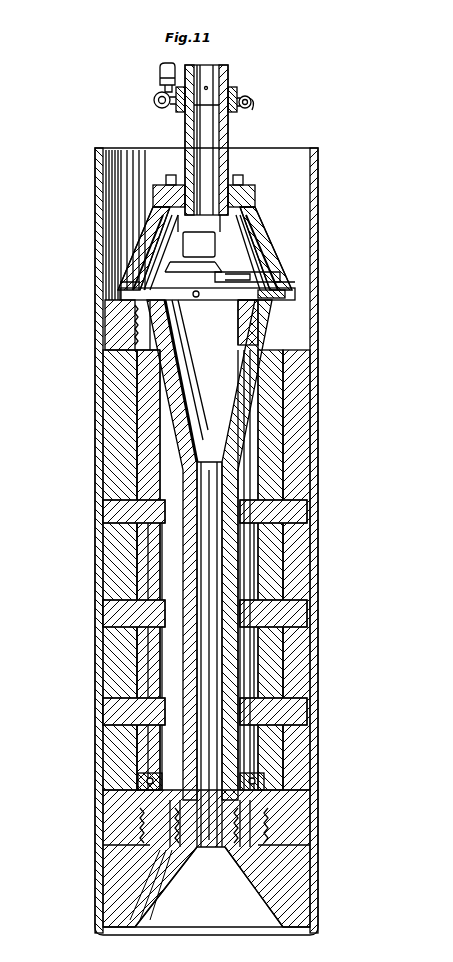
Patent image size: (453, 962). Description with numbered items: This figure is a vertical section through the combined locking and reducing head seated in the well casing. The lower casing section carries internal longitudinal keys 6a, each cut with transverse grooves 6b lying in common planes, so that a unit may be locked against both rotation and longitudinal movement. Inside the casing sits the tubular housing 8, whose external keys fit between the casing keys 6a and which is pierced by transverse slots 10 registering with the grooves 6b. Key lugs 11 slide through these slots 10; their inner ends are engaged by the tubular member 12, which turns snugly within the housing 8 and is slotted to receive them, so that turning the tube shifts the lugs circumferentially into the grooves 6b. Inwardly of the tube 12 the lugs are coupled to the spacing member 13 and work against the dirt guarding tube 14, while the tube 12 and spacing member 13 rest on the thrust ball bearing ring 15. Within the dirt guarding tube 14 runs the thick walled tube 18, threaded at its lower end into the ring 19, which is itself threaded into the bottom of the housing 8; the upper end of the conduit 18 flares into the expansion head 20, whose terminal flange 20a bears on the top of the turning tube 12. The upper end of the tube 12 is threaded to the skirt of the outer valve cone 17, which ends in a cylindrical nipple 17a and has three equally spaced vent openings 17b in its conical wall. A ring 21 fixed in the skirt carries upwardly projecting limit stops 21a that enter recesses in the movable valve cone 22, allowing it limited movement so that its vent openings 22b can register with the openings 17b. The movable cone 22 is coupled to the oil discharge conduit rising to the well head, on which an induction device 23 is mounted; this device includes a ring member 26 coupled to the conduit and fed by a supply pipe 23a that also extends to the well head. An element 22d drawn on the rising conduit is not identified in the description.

The tubular housing 8 is at (295, 433).
The feed tube 22d is at (228, 130).
The induction device 23 is at (251, 100).
The supply pipe 23a is at (160, 76).
The ring member 26 is at (163, 108).
The tubular member 12 is at (140, 85).
The spacing member 13 is at (75, 258).
The dirt guarding tube 14 is at (75, 625).
The thrust ball bearing ring 15 is at (75, 930).
The outer valve cone 17 is at (265, 222).
The nipple 17a is at (255, 210).
The vent openings 17b is at (262, 243).
The ring 21 is at (285, 288).
The limit stops 21a is at (282, 270).
The expansion head 20 is at (209, 550).
The terminal flange 20a is at (262, 302).
The movable valve cone 22 is at (200, 244).
The vent openings 22b is at (215, 280).
The keys 6a is at (300, 482).
The transverse grooves 6b is at (305, 722).
The key lugs 11 is at (300, 512).
The transverse slots 10 is at (298, 690).
The thick walled tube 18 is at (225, 675).
The ring 19 is at (290, 875).